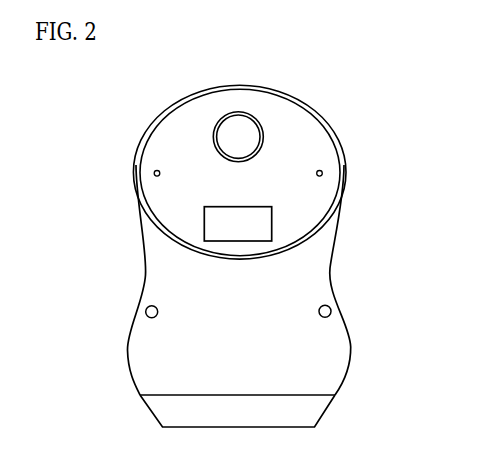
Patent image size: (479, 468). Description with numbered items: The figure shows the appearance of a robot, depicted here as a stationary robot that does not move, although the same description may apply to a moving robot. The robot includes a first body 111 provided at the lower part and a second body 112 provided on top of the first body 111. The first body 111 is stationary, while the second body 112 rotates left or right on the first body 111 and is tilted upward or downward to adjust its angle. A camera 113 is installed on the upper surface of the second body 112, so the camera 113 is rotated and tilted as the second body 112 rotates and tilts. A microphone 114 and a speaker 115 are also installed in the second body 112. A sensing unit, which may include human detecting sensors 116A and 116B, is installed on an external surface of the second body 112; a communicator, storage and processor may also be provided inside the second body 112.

The first body 111 is at (318, 405).
The second body 112 is at (318, 245).
The camera 113 is at (262, 123).
The microphone 114 is at (154, 173).
The speaker 115 is at (203, 221).
The human detecting sensor 116A is at (145, 311).
The human detecting sensor 116B is at (331, 310).